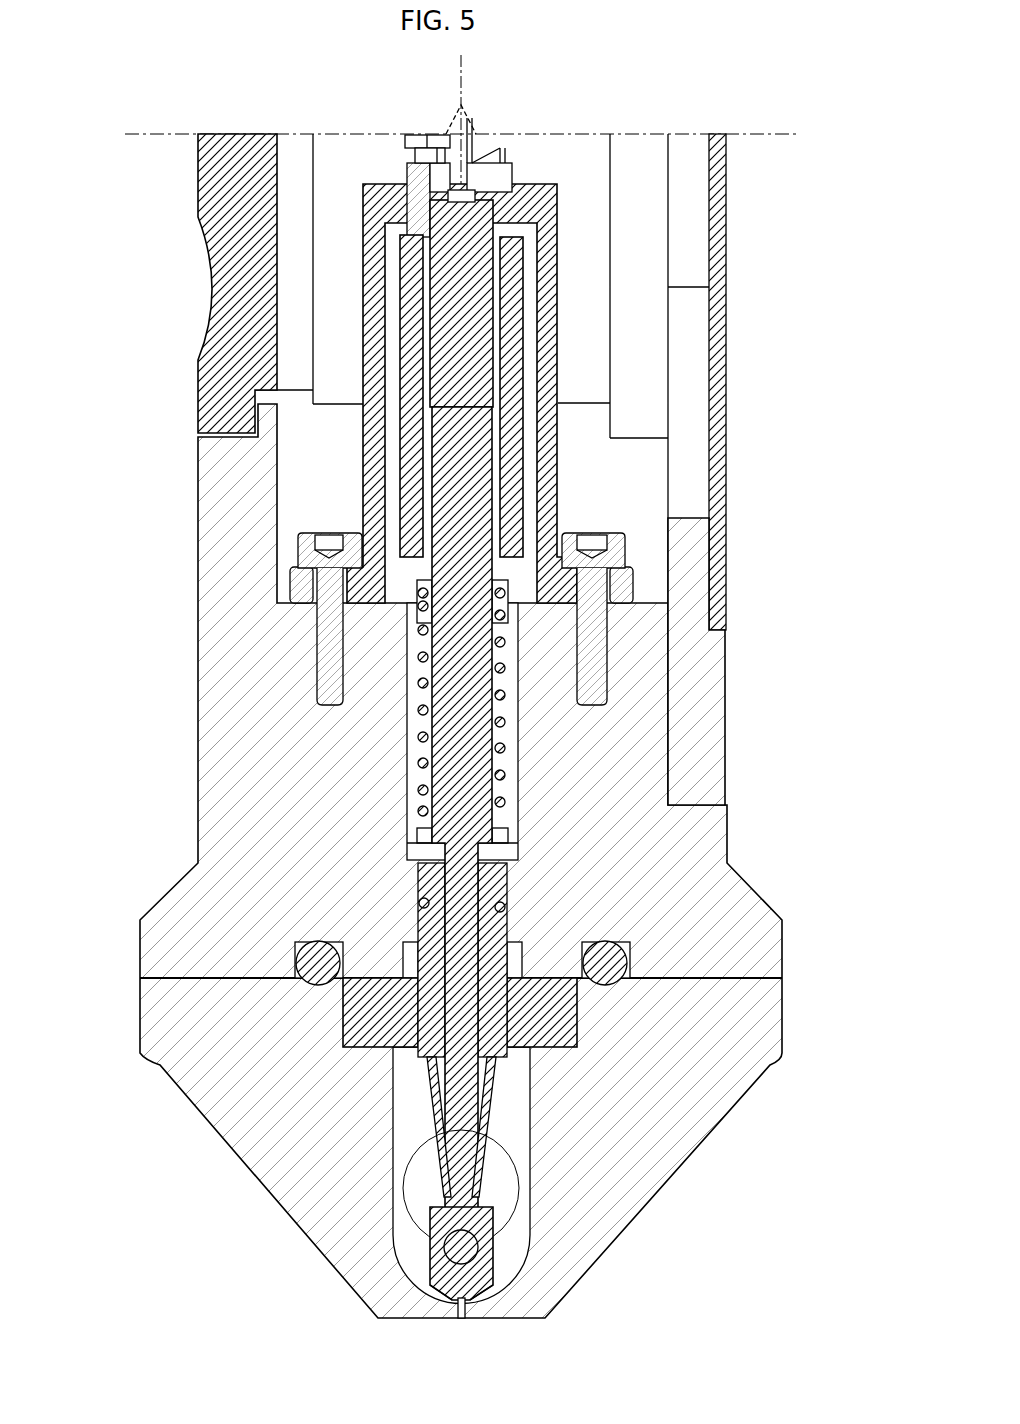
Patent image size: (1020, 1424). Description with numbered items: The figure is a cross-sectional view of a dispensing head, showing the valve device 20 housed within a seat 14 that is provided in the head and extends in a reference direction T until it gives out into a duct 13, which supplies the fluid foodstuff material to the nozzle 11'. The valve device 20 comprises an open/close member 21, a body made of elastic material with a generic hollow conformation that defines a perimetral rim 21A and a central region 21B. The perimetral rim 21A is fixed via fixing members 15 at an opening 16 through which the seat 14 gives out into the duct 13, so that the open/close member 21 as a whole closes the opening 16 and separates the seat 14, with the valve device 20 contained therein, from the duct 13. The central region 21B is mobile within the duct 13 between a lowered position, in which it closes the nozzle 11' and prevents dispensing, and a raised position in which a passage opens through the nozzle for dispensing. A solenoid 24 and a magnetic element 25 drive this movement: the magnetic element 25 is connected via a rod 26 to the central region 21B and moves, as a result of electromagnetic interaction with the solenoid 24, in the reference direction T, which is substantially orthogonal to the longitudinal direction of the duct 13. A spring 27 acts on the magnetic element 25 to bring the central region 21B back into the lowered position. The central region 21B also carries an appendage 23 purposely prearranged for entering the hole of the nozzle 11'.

The reference direction T is at (463, 68).
The valve device 20 is at (200, 175).
The seat 14 is at (277, 312).
The solenoid 24 is at (413, 300).
The magnetic element 25 is at (473, 298).
The rod 26 is at (462, 790).
The spring 27 is at (425, 737).
The opening 16 is at (432, 1028).
The fixing members 15 is at (556, 1015).
The perimetral rim 21A is at (503, 1000).
The open/close member 21 is at (443, 1193).
The central region 21B is at (440, 1287).
The duct 13 is at (515, 1230).
The appendage 23 is at (482, 1273).
The nozzle 11' is at (529, 1332).